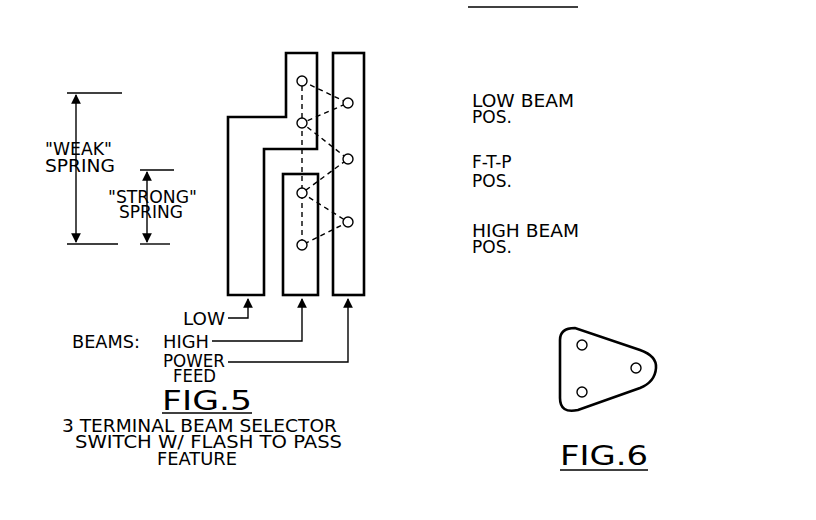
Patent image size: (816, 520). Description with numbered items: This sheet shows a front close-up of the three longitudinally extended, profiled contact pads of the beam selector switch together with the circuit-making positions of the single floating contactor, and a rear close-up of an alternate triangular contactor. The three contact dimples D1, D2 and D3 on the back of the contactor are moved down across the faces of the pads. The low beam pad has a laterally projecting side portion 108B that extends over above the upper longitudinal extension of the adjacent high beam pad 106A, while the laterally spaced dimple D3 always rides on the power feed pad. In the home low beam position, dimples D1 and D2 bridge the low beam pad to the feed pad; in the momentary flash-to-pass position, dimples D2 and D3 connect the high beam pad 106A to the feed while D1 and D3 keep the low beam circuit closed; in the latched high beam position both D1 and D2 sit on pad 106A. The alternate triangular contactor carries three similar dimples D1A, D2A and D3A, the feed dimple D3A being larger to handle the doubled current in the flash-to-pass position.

In FIG. 5, the first contact dimple D1 is at (298, 79).
In FIG. 5, the second contact dimple D2 is at (297, 121).
In FIG. 5, the third contact dimple D3 is at (353, 101).
In FIG. 5, the laterally projecting side portion 108B is at (307, 148).
In FIG. 5, the high beam terminal pad 106A is at (308, 288).
In FIG. 6, the first contact dimple of triangular contactor D1A is at (577, 345).
In FIG. 6, the second contact dimple of triangular contactor D2A is at (577, 392).
In FIG. 6, the feed contact dimple D3A is at (641, 367).